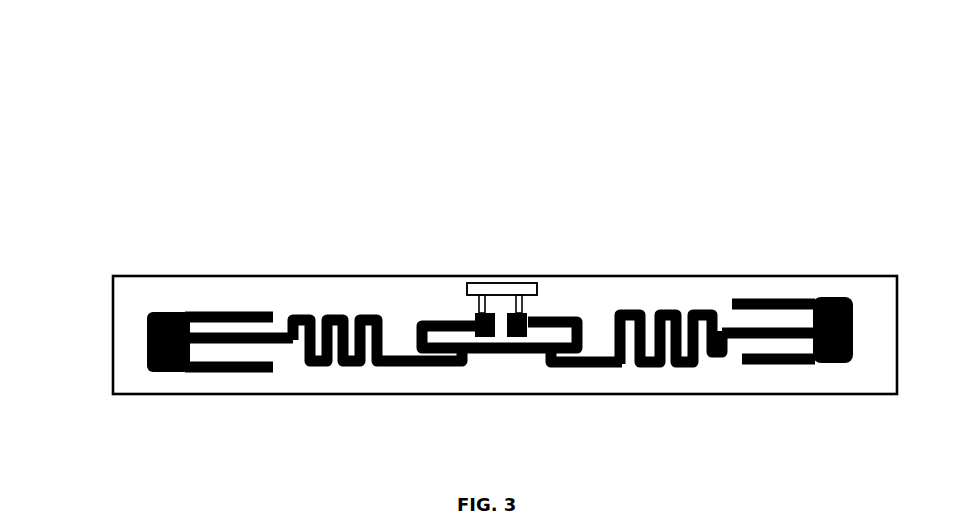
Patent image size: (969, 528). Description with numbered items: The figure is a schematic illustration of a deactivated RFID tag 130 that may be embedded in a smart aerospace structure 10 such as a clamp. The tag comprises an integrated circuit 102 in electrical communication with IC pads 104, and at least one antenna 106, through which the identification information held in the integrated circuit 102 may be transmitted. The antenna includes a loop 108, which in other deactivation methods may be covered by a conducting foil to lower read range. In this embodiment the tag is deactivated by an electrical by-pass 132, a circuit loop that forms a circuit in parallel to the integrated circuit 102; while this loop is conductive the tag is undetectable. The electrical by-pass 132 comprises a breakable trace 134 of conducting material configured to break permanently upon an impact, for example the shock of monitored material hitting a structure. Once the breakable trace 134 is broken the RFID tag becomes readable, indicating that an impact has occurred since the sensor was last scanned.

The smart aerospace structure 10 is at (100, 155).
The integrated circuit 102 is at (493, 282).
The IC pads 104 is at (473, 315).
The antenna 106 is at (228, 310).
The loop 108 is at (522, 372).
The deactivated RFID tag 130 is at (313, 272).
The electrical by-pass 132 is at (520, 278).
The breakable trace 134 is at (495, 287).